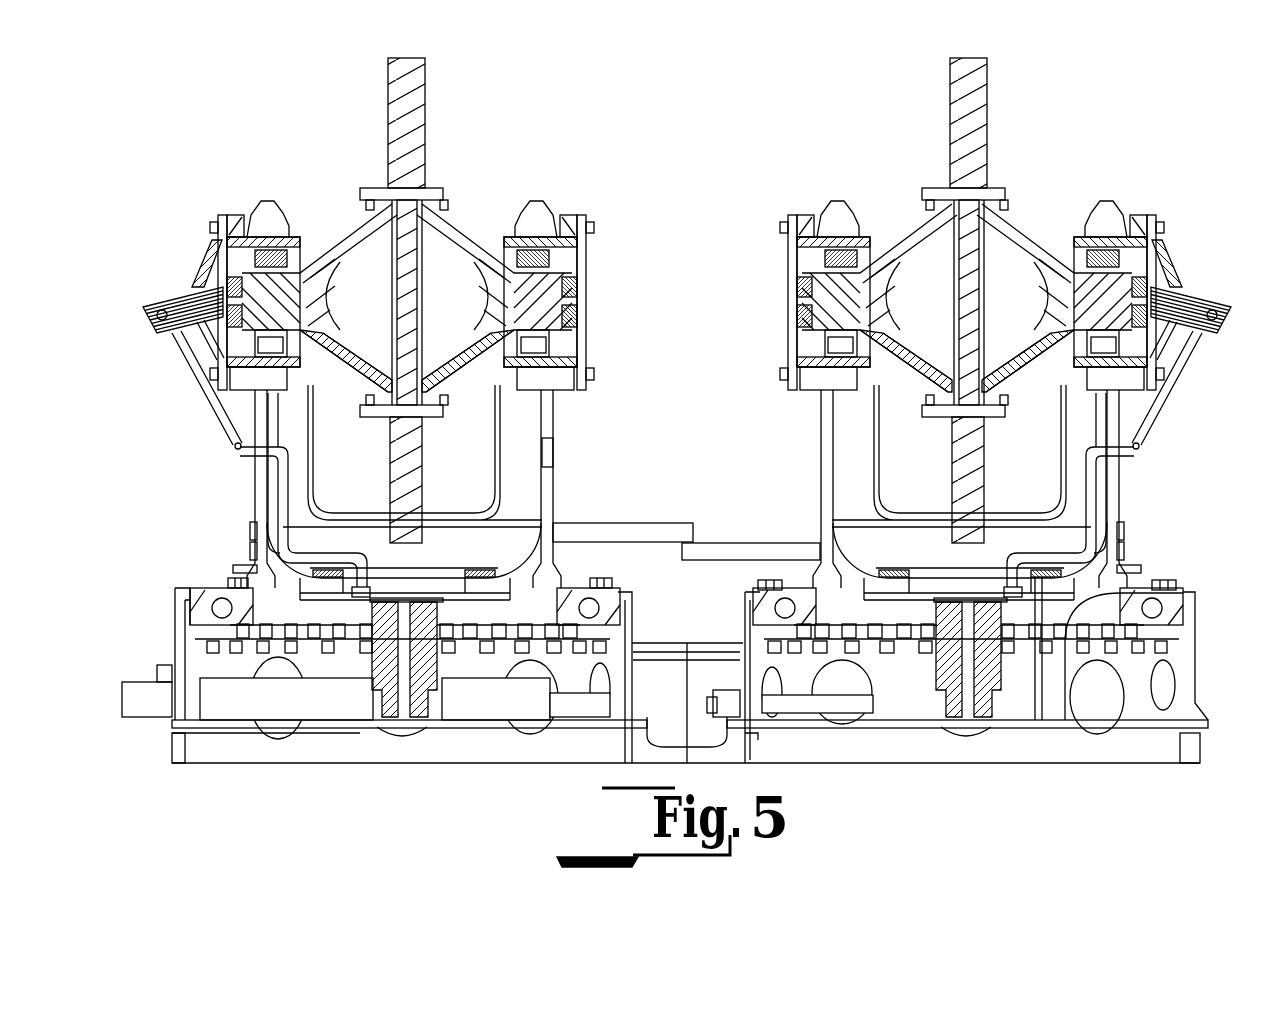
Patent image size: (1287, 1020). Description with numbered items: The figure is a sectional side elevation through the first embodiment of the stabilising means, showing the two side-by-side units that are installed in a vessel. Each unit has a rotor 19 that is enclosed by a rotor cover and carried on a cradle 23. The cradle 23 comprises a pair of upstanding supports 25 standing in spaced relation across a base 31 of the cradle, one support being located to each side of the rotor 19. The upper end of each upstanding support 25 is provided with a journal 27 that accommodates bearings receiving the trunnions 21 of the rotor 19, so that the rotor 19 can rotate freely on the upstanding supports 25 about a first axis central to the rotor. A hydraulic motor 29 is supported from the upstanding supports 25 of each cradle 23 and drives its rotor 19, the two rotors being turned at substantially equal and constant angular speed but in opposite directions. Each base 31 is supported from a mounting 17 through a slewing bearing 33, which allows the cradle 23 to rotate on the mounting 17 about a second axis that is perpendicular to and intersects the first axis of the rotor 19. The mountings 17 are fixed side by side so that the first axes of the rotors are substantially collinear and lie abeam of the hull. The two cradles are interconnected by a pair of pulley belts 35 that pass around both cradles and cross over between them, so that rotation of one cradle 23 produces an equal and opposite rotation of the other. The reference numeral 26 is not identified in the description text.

The mounting 17 is at (190, 667).
The rotor 19 is at (418, 88).
The trunnions 21 is at (300, 272).
The cradle 23 is at (1150, 517).
The upstanding supports 25 is at (252, 440).
The support column 26 is at (553, 416).
The journal 27 is at (838, 345).
The hydraulic motor 29 is at (177, 303).
The base 31 is at (300, 590).
The slewing bearing 33 is at (195, 608).
The pulley belts 35 is at (248, 548).